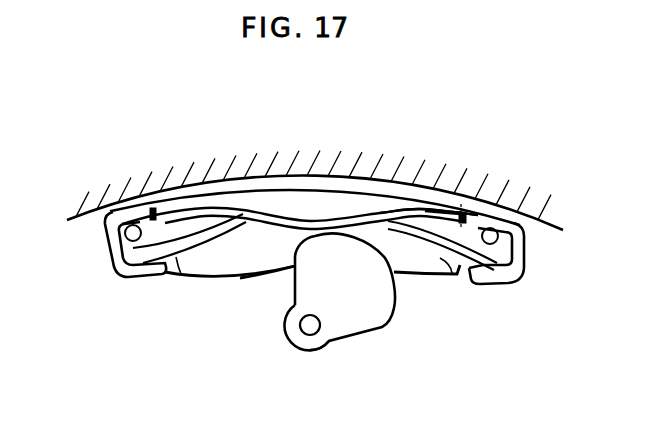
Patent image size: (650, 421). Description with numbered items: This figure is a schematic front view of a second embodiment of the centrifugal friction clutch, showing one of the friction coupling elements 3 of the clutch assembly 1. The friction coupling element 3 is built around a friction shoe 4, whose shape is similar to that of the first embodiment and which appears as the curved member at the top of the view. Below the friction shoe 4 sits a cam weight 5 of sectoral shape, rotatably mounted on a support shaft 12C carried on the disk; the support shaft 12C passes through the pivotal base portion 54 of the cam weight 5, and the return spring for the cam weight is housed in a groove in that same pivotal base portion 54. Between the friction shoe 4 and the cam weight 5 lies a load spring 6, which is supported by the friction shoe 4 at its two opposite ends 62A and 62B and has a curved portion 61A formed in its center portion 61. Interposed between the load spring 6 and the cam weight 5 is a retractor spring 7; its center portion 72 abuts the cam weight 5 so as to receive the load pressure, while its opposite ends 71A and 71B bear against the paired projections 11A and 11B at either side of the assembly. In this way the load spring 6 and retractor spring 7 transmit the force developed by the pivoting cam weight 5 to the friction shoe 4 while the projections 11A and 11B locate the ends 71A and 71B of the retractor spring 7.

The wiper assembly 1 is at (92, 228).
The friction coupling element 3 is at (148, 192).
The friction shoe 4 is at (273, 192).
The cam weight 5 is at (383, 311).
The load spring 6 is at (437, 203).
The retractor spring 7 is at (228, 240).
The projection 11A is at (544, 219).
The projection 11B is at (126, 233).
The support shaft 12C is at (306, 330).
The pivotal base portion 54 is at (316, 340).
The center portion 61 is at (325, 217).
The curved portion 61A is at (371, 209).
The end 62A is at (483, 210).
The end 62B is at (177, 197).
The end 71A is at (525, 264).
The end 71B is at (130, 277).
The center portion 72 is at (274, 264).